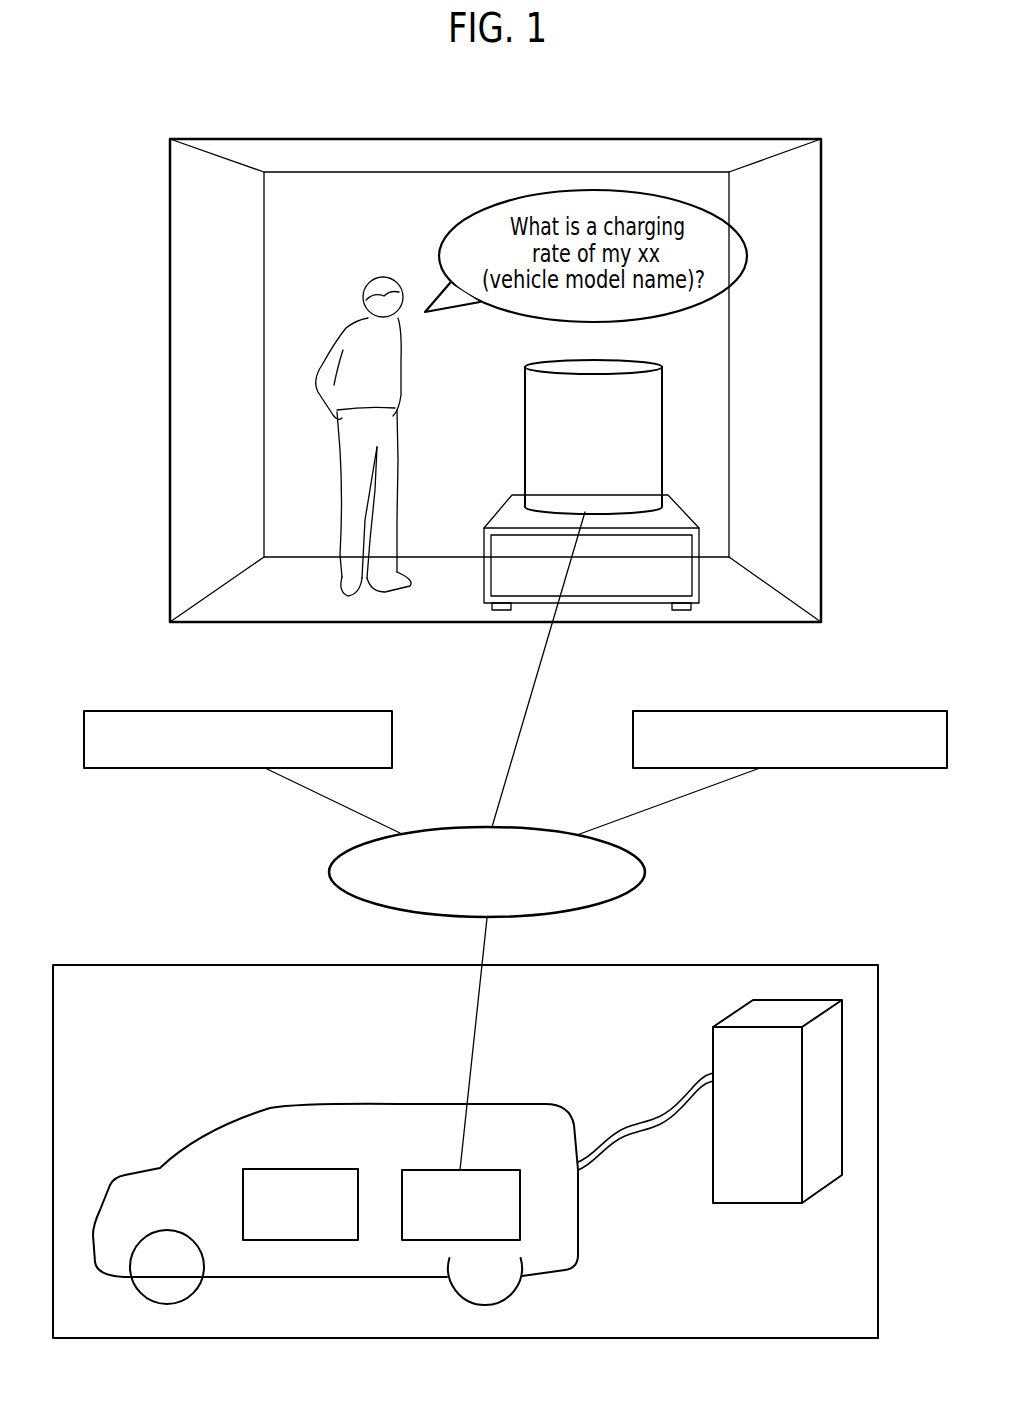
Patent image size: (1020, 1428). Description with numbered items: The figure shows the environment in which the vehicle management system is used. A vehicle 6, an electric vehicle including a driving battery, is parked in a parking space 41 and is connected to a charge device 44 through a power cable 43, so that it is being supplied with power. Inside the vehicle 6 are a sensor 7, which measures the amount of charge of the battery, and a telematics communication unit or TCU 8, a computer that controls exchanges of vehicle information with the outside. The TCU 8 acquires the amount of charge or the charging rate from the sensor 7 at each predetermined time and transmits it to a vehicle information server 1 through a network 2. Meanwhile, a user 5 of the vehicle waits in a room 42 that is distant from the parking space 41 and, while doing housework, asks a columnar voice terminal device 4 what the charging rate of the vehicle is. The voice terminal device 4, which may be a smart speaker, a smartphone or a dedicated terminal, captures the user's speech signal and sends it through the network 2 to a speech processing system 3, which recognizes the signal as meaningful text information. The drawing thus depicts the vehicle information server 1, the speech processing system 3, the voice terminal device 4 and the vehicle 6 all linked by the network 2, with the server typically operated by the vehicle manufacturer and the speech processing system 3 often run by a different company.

The vehicle information server 1 is at (287, 711).
The network 2 is at (645, 862).
The speech processing system 3 is at (842, 711).
The voice terminal device 4 is at (604, 363).
The user 5 is at (403, 388).
The vehicle 6 is at (393, 1105).
The sensor 7 is at (295, 1169).
The telematics communication unit (TCU) 8 is at (485, 1170).
The parking space 41 is at (150, 965).
The room 42 is at (331, 139).
The power cable 43 is at (655, 1130).
The charge device 44 is at (713, 1050).